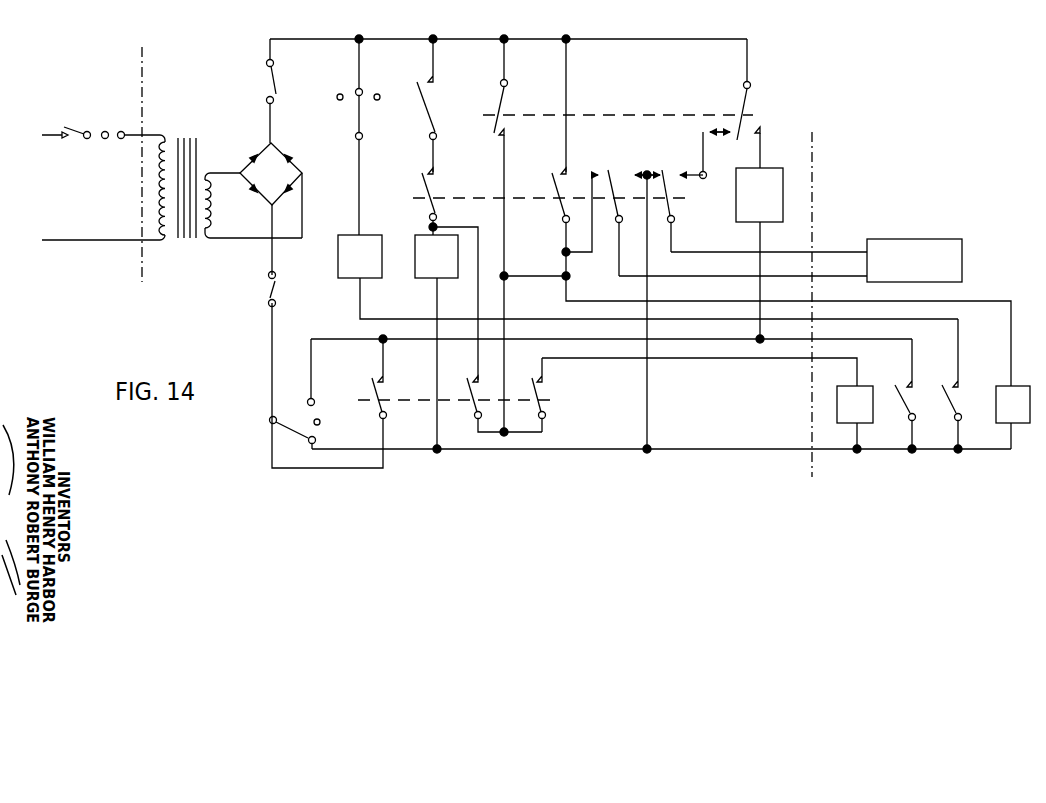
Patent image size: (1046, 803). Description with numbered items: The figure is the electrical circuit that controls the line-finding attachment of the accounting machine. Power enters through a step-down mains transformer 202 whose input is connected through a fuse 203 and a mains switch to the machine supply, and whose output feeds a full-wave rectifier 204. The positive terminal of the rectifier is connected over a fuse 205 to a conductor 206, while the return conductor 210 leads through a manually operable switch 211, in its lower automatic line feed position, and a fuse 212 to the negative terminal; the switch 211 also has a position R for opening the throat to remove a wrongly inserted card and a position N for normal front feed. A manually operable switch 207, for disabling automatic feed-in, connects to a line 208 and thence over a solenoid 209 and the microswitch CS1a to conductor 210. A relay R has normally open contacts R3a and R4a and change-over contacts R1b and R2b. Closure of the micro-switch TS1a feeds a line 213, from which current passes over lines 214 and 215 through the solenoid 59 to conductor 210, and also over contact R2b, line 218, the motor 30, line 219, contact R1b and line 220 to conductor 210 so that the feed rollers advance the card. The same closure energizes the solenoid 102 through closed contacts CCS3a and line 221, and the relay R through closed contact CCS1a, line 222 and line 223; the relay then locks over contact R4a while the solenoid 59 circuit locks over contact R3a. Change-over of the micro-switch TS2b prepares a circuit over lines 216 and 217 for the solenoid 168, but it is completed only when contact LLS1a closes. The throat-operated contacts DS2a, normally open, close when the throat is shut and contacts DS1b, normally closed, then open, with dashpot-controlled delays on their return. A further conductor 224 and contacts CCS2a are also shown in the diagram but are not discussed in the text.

The step-down mains transformer 202 is at (183, 241).
The fuse 203 is at (117, 125).
The full-wave rectifier 204 is at (294, 158).
The fuse 205 is at (274, 81).
The conductor 206 is at (290, 39).
The manually operable switch 207 is at (360, 111).
The line 208 is at (360, 186).
The solenoid 209 is at (360, 256).
The return conductor 210 is at (558, 449).
The manually operable switch 211 is at (299, 427).
The fuse 212 is at (272, 291).
The line 213 is at (505, 257).
The line 214 is at (548, 277).
The line 215 is at (726, 301).
The line 216 is at (761, 293).
The line 217 is at (868, 339).
The line 218 is at (726, 276).
The line 219 is at (726, 252).
The line 220 is at (649, 407).
The line 221 is at (723, 358).
The line 222 is at (479, 302).
The line 223 is at (438, 302).
The conductor 224 is at (567, 101).
The solenoid 168 is at (759, 195).
The motor 30 is at (914, 260).
The solenoid 102 is at (855, 419).
The solenoid 59 is at (1013, 417).
The relay R is at (436, 256).
The normally open contacts DS2a is at (423, 100).
The normally open contact R4a is at (428, 185).
The micro-switch TS1a is at (499, 100).
The normally open contact R3a is at (558, 186).
The change-over contact R2b is at (609, 171).
The change-over contact R1b is at (663, 168).
The normally closed contacts DS1b is at (701, 150).
The micro-switch TS2b is at (744, 103).
The contact CCS1a is at (462, 392).
The switch contact CCS2a is at (373, 392).
The contacts CCS3a is at (540, 393).
The contact LLS1a is at (897, 395).
The microswitch CS1a is at (943, 395).